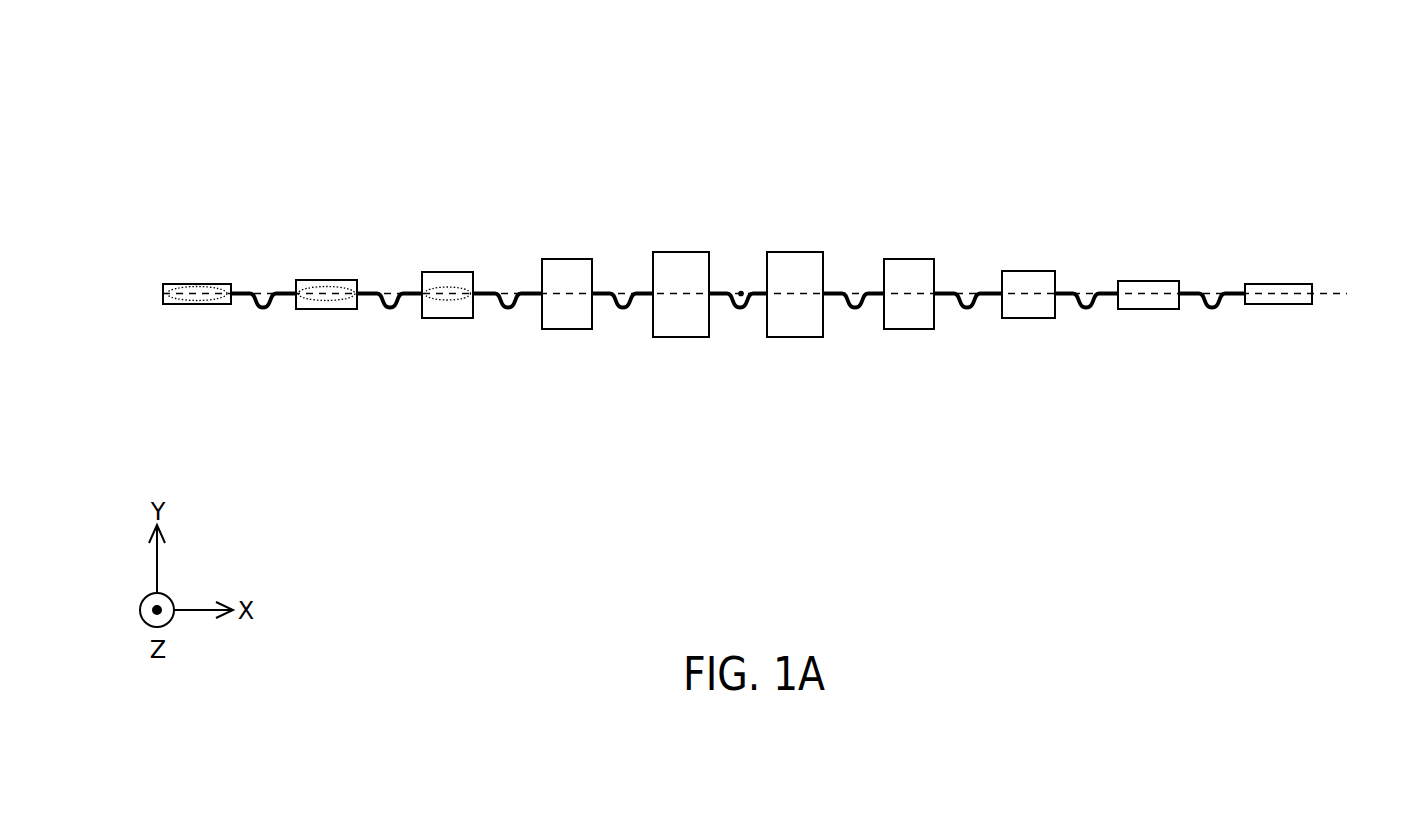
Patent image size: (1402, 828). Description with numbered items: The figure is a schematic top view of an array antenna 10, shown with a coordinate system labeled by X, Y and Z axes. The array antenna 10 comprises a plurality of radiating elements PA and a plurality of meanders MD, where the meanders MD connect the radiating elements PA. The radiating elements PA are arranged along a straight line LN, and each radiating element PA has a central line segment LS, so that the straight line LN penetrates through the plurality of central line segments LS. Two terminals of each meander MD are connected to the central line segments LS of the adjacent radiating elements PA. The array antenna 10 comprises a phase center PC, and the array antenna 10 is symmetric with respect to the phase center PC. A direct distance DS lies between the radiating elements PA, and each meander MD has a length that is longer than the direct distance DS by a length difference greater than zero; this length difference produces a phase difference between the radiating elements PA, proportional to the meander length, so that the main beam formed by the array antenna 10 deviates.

The array antenna 10 is at (1182, 88).
The radiating element PA is at (198, 292).
The central line segment LS is at (197, 305).
The meander MD is at (263, 310).
The direct distance DS is at (231, 273).
The phase center PC is at (741, 291).
The straight line LN is at (1343, 290).